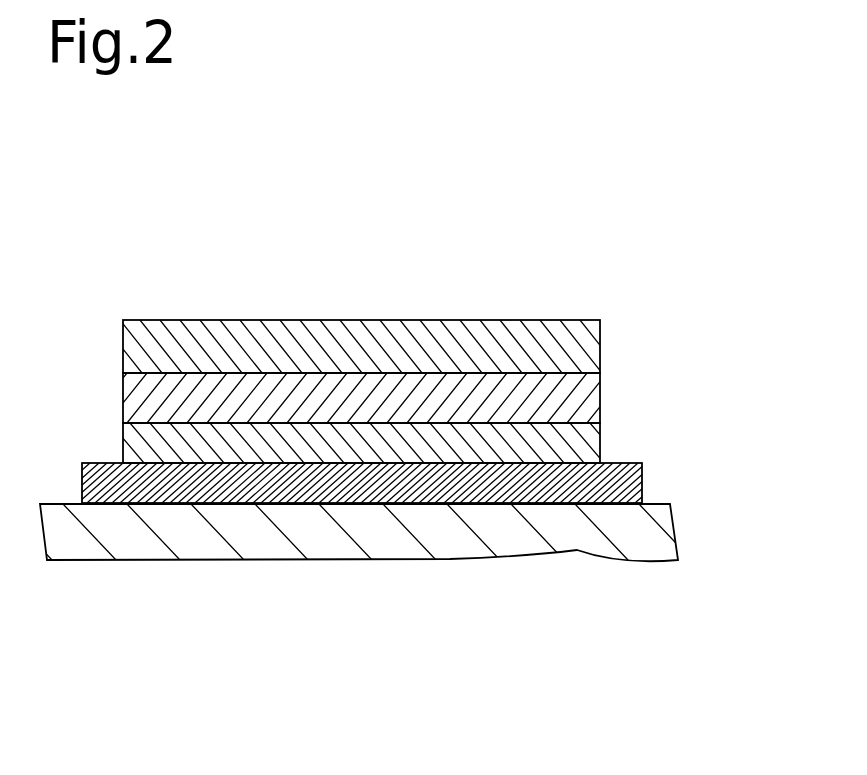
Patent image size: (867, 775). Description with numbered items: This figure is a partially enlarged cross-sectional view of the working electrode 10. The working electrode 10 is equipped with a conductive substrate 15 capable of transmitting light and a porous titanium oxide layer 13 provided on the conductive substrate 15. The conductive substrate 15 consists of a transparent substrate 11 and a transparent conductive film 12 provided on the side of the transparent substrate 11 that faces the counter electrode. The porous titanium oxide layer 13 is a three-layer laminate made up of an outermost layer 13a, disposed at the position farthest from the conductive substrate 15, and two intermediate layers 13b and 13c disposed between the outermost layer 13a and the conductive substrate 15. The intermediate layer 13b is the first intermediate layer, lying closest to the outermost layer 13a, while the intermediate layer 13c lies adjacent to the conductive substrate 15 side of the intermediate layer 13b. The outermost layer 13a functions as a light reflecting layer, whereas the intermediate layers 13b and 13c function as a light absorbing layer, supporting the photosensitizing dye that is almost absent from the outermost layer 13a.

The working electrode 10 is at (417, 317).
The transparent substrate 11 is at (228, 532).
The transparent conductive film 12 is at (348, 487).
The porous titanium oxide layer 13 is at (417, 391).
The outermost layer 13a is at (577, 343).
The intermediate layer 13b is at (580, 395).
The intermediate layer 13c is at (393, 447).
The conductive substrate 15 is at (346, 598).